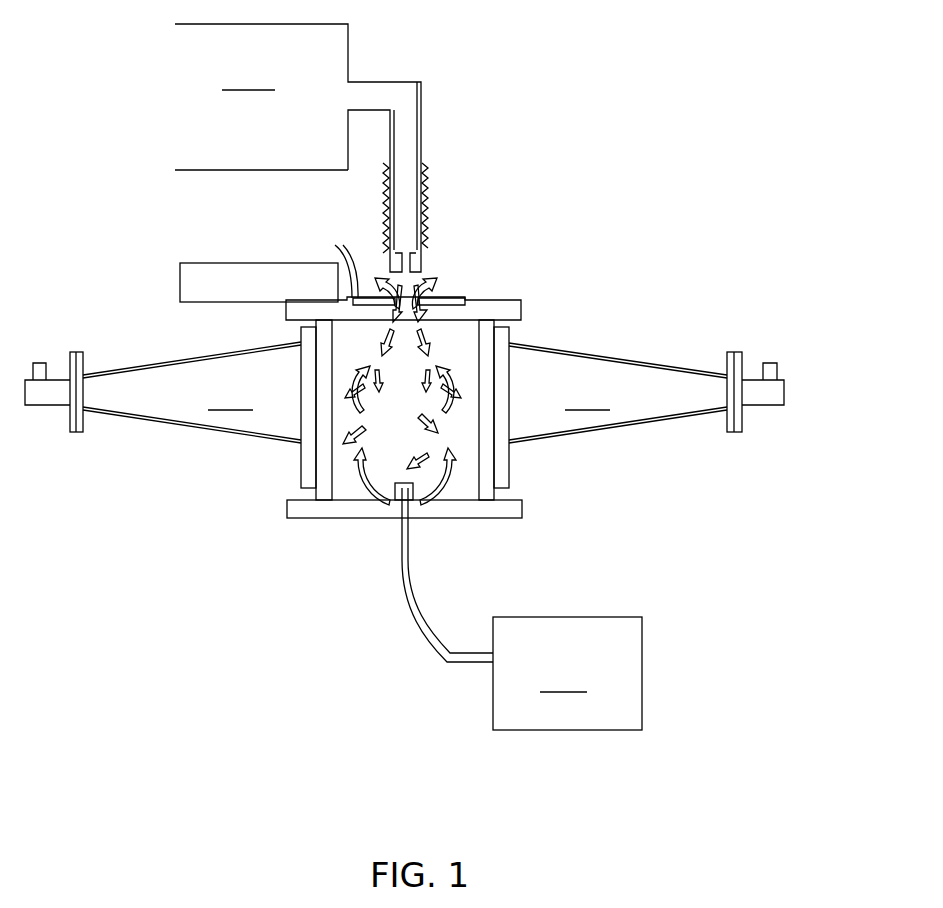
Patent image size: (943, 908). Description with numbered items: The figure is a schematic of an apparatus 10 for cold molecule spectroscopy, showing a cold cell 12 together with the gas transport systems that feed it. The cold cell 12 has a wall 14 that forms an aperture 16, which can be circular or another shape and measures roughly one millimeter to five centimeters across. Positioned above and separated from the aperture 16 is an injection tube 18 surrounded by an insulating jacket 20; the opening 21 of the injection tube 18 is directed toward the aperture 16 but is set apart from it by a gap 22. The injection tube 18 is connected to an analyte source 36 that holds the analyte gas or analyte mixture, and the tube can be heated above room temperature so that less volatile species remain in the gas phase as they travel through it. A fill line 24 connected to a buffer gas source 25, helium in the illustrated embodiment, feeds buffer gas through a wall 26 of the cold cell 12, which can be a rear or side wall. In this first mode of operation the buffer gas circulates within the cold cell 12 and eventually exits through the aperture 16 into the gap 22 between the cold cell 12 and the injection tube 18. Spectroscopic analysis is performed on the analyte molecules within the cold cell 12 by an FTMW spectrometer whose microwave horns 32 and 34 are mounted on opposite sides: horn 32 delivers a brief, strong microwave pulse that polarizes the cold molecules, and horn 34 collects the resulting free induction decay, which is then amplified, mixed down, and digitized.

The apparatus 10 is at (720, 140).
The cold cell 12 is at (482, 536).
The wall 14 is at (497, 297).
The aperture 16 is at (420, 295).
The injection tube 18 is at (410, 218).
The insulating jacket 20 is at (427, 160).
The opening 21 is at (422, 257).
The gap 22 is at (398, 278).
The fill line 24 is at (402, 588).
The buffer gas source 25 is at (567, 673).
The wall 26 is at (355, 518).
The microwave horn 32 is at (163, 392).
The microwave horn 34 is at (646, 393).
The analyte source 36 is at (298, 137).